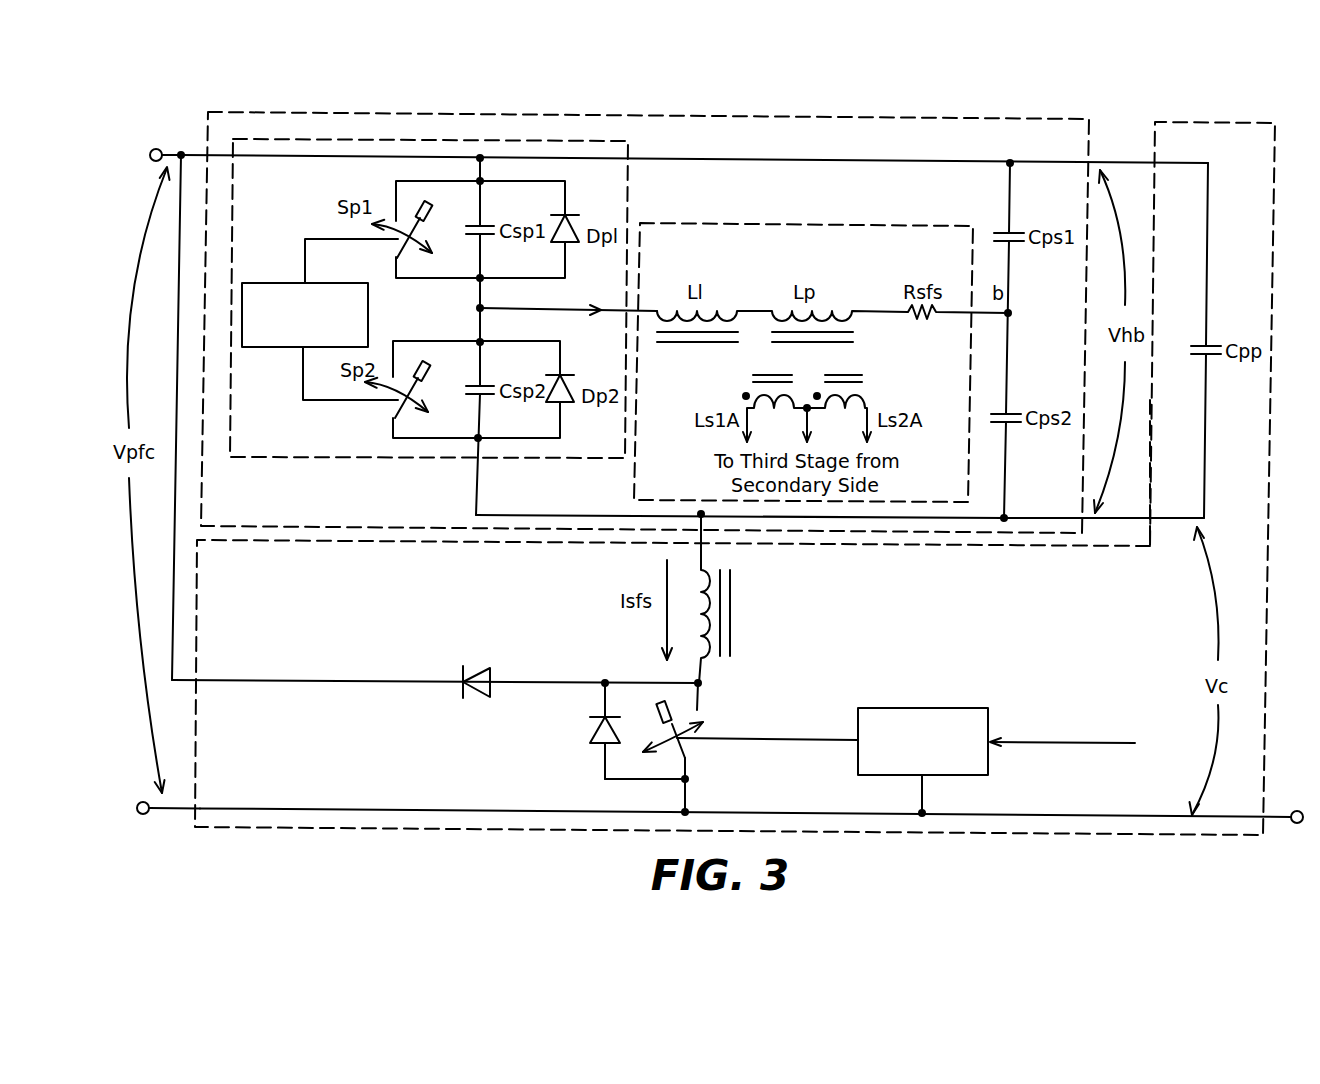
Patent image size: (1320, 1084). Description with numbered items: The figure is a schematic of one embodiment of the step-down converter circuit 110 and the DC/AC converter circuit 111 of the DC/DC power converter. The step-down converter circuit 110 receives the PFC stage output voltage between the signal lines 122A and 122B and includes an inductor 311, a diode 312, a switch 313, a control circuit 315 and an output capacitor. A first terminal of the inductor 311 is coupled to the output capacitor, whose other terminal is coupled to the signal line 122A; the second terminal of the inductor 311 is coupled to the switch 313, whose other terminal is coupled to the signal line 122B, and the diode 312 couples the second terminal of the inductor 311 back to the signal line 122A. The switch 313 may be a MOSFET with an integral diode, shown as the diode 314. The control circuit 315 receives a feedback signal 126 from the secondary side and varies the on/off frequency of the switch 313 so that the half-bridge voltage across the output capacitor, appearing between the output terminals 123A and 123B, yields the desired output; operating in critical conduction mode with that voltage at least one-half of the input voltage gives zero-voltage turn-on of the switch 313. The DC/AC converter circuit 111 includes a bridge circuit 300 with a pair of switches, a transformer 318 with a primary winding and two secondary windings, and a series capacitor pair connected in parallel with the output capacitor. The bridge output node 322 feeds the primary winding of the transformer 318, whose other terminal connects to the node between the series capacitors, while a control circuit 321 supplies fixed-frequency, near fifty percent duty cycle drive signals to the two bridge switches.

The step-down converter circuit 110 is at (302, 828).
The DC/AC converter circuit 111 is at (207, 113).
The signal line 122A is at (196, 153).
The signal line 122B is at (182, 808).
The output section upper terminal 123A is at (1170, 163).
The output section lower terminal 123B is at (1181, 521).
The feedback signal from secondary side 126 is at (1055, 746).
The bridge circuit 300 is at (632, 142).
The inductor 311 is at (731, 608).
The diode 312 is at (483, 697).
The switch 313 is at (692, 718).
The diode 314 is at (592, 742).
The control circuit 315 is at (940, 708).
The transformer 318 is at (828, 223).
The control circuit 321 is at (294, 283).
The half-bridge midpoint node 322 is at (478, 309).